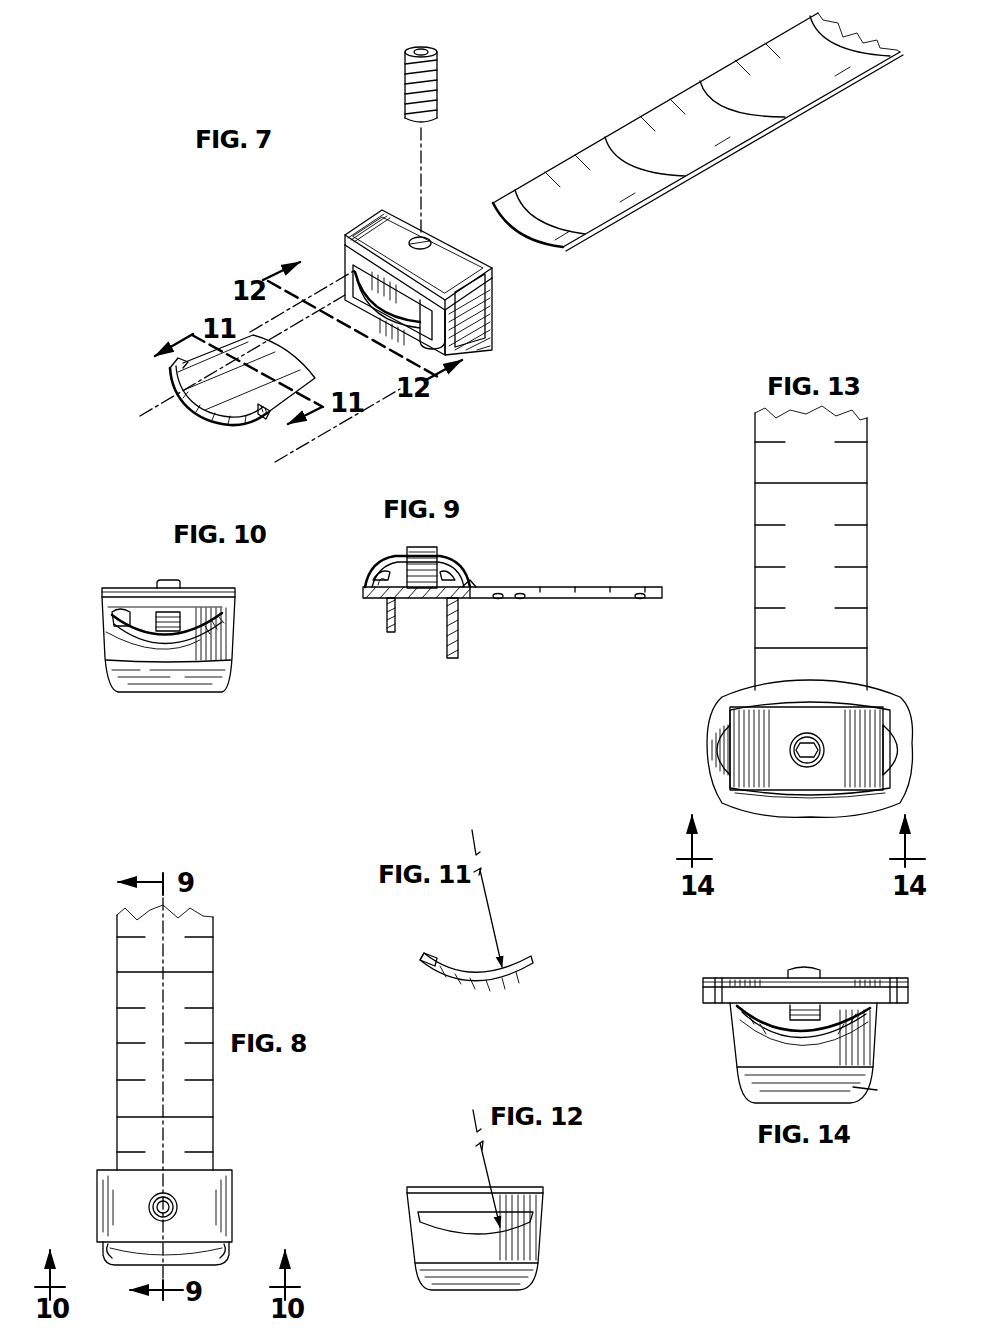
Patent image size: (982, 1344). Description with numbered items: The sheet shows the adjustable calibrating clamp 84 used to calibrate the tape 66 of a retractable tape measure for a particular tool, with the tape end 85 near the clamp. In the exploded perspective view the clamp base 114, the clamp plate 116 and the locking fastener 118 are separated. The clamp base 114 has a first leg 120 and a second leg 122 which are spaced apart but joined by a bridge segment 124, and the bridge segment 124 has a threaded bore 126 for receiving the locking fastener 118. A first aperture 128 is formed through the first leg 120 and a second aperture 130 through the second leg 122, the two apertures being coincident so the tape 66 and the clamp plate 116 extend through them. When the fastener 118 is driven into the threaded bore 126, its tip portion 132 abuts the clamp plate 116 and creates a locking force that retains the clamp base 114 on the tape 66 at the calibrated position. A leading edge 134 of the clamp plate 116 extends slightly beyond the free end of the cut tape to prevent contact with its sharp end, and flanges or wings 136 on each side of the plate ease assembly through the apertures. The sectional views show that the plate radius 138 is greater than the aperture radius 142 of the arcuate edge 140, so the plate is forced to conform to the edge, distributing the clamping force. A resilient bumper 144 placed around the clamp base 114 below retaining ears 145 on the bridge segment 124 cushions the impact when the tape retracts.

In FIG. 7, the tape 66 is at (657, 197).
In FIG. 9, the tape 66 is at (603, 587).
In FIG. 13, the tape 66 is at (763, 668).
In FIG. 8, the tape 66 is at (210, 1100).
In FIG. 7, the adjustable calibrating clamp 84 is at (225, 200).
In FIG. 7, the tape end 85 is at (537, 243).
In FIG. 7, the clamp base 114 is at (376, 288).
In FIG. 9, the clamp base 114 is at (462, 562).
In FIG. 7, the clamp plate 116 is at (247, 336).
In FIG. 10, the clamp plate 116 is at (210, 612).
In FIG. 9, the clamp plate 116 is at (372, 583).
In FIG. 13, the clamp plate 116 is at (807, 796).
In FIG. 8, the clamp plate 116 is at (208, 1252).
In FIG. 11, the clamp plate 116 is at (455, 966).
In FIG. 14, the clamp plate 116 is at (767, 1012).
In FIG. 7, the locking fastener 118 is at (406, 78).
In FIG. 10, the locking fastener 118 is at (165, 579).
In FIG. 9, the locking fastener 118 is at (423, 562).
In FIG. 13, the locking fastener 118 is at (807, 750).
In FIG. 8, the locking fastener 118 is at (152, 1203).
In FIG. 14, the locking fastener 118 is at (813, 968).
In FIG. 7, the first leg 120 is at (420, 343).
In FIG. 10, the first leg 120 is at (223, 640).
In FIG. 9, the first leg 120 is at (387, 618).
In FIG. 12, the first leg 120 is at (420, 1242).
In FIG. 14, the first leg 120 is at (750, 1047).
In FIG. 7, the second leg 122 is at (485, 353).
In FIG. 10, the second leg 122 is at (230, 672).
In FIG. 9, the second leg 122 is at (459, 635).
In FIG. 12, the second leg 122 is at (533, 1272).
In FIG. 14, the second leg 122 is at (753, 1087).
In FIG. 7, the bridge segment 124 is at (380, 208).
In FIG. 10, the bridge segment 124 is at (207, 588).
In FIG. 9, the bridge segment 124 is at (443, 575).
In FIG. 13, the bridge segment 124 is at (753, 773).
In FIG. 8, the bridge segment 124 is at (233, 1197).
In FIG. 14, the bridge segment 124 is at (767, 980).
In FIG. 7, the threaded bore 126 is at (417, 239).
In FIG. 7, the first aperture 128 is at (440, 350).
In FIG. 10, the first aperture 128 is at (122, 610).
In FIG. 9, the first aperture 128 is at (378, 573).
In FIG. 7, the second aperture 130 is at (494, 320).
In FIG. 9, the second aperture 130 is at (467, 589).
In FIG. 7, the tip portion 132 is at (428, 121).
In FIG. 7, the leading edge 134 is at (216, 422).
In FIG. 10, the leading edge 134 is at (163, 642).
In FIG. 8, the leading edge 134 is at (208, 1252).
In FIG. 14, the leading edge 134 is at (853, 1087).
In FIG. 7, the flanges or wings 136 is at (172, 371).
In FIG. 9, the flanges or wings 136 is at (380, 570).
In FIG. 8, the flanges or wings 136 is at (113, 1253).
In FIG. 11, the flanges or wings 136 is at (422, 962).
In FIG. 11, the plate radius 138 is at (493, 903).
In FIG. 12, the arcuate edge 140 is at (525, 1240).
In FIG. 12, the aperture radius 142 is at (488, 1170).
In FIG. 13, the bumper 144 is at (728, 695).
In FIG. 14, the bumper 144 is at (703, 992).
In FIG. 13, the retaining ears 145 is at (715, 750).
In FIG. 14, the retaining ears 145 is at (717, 981).